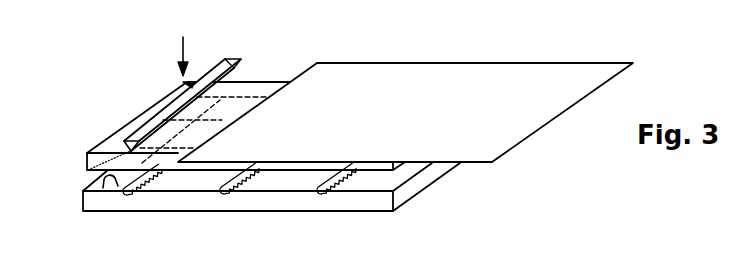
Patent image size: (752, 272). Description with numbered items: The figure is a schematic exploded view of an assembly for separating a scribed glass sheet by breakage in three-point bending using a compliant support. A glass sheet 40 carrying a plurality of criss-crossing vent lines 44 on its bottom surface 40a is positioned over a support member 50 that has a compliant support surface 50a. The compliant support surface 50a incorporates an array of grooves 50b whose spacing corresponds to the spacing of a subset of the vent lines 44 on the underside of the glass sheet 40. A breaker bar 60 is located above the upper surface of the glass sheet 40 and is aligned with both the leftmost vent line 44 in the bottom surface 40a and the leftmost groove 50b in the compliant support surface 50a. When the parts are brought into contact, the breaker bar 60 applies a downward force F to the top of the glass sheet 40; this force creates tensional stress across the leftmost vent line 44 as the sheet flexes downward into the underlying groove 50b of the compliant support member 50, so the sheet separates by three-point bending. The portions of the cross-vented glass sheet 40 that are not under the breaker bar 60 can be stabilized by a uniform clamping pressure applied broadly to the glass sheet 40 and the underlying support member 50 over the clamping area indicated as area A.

The glass sheet 40 is at (118, 129).
The bottom surface 40a is at (98, 174).
The vent lines 44 is at (322, 122).
The support member 50 is at (82, 203).
The compliant support surface 50a is at (116, 179).
The grooves 50b is at (225, 192).
The breaker bar 60 is at (152, 125).
The clamping area A is at (478, 155).
The downward force F is at (173, 53).